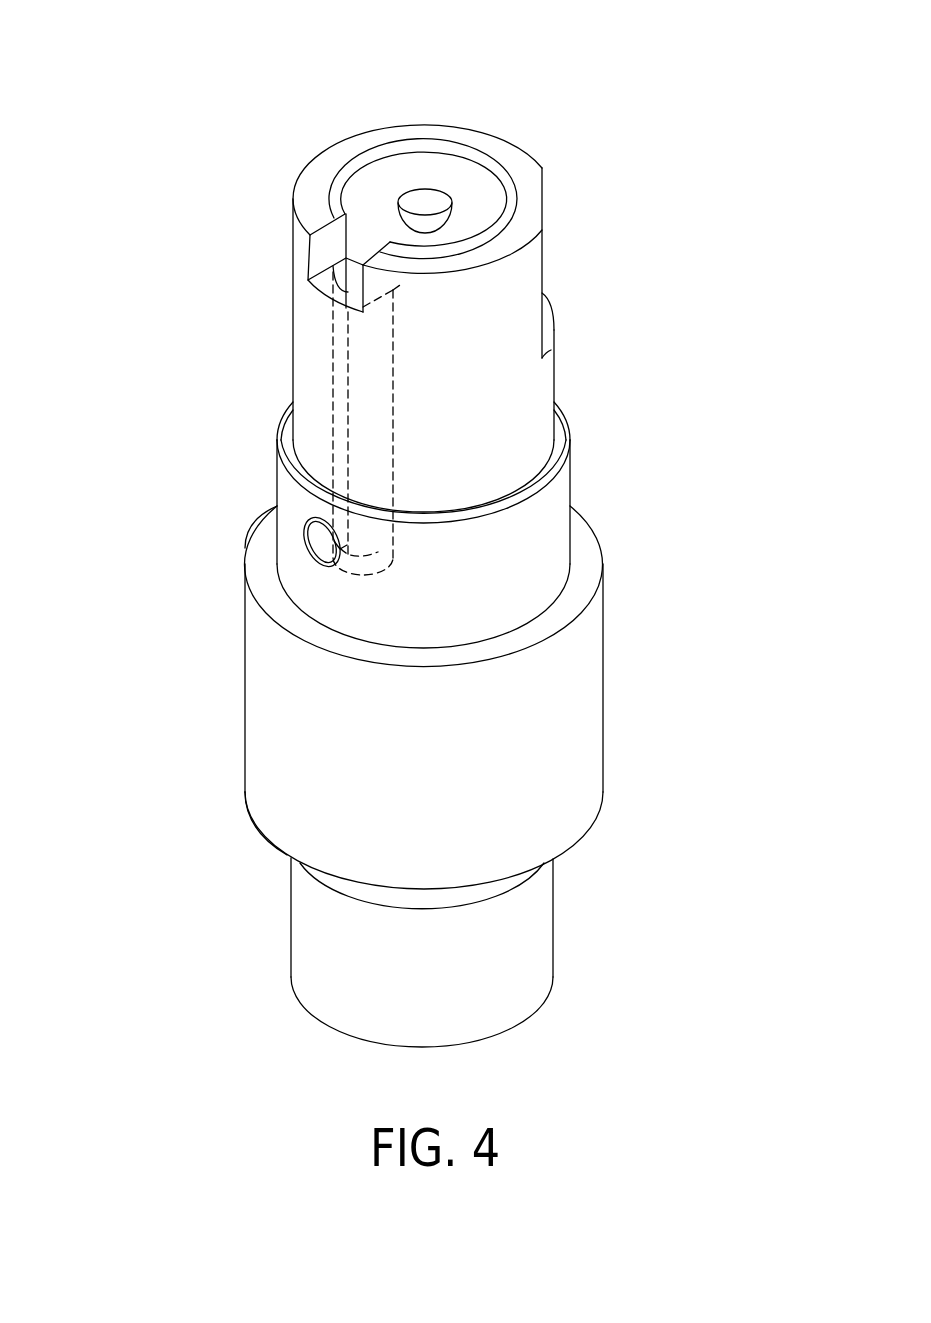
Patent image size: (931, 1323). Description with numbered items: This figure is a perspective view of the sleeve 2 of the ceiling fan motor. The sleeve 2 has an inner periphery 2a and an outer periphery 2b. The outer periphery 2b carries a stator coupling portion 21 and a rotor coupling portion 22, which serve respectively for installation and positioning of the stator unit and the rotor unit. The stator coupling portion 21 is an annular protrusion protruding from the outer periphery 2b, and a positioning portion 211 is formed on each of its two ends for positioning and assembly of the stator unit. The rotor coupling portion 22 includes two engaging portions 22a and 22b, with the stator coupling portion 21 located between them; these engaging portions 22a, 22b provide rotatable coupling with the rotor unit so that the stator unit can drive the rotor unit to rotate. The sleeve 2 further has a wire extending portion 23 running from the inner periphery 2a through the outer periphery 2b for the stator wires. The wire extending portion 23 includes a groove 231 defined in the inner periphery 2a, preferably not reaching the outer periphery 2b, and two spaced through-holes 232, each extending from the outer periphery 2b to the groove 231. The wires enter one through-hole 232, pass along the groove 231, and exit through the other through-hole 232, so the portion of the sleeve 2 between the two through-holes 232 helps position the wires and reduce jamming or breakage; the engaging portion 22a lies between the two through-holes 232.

The sleeve 2 is at (616, 333).
The inner periphery 2a is at (473, 190).
The outer periphery 2b is at (522, 275).
The stator coupling portion 21 is at (265, 697).
The positioning portion 211 is at (257, 561).
The rotor coupling portion 22 is at (770, 600).
The engaging portion 22a is at (557, 452).
The engaging portion 22b is at (565, 915).
The wire extending portion 23 is at (100, 217).
The groove 231 is at (338, 372).
The through-hole 232 is at (327, 248).